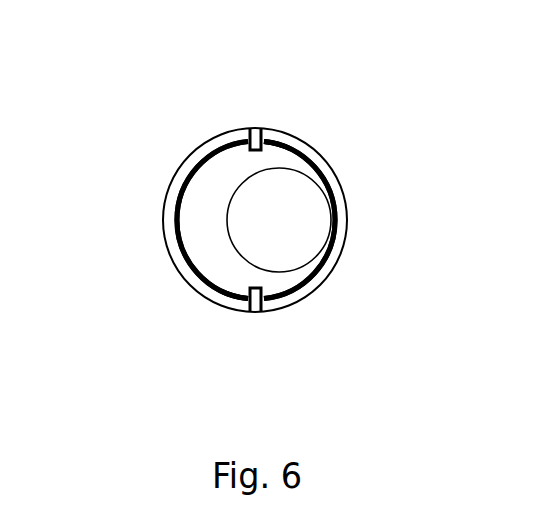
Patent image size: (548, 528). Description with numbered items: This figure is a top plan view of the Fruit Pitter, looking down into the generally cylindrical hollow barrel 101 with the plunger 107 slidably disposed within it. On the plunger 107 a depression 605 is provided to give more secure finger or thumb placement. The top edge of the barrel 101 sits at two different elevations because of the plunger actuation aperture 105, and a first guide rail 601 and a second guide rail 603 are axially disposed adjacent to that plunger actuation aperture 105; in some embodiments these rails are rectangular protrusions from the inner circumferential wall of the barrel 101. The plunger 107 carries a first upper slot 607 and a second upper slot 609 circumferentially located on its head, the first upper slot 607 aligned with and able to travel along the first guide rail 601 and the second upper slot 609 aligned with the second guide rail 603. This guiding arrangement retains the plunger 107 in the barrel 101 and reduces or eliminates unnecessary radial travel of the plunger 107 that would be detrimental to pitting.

The barrel 101 is at (173, 216).
The plunger actuation aperture 105 is at (313, 153).
The plunger 107 is at (213, 175).
The first guide rail 601 is at (253, 137).
The second guide rail 603 is at (257, 305).
The depression 605 is at (308, 222).
The first upper slot 607 is at (272, 146).
The second upper slot 609 is at (245, 292).